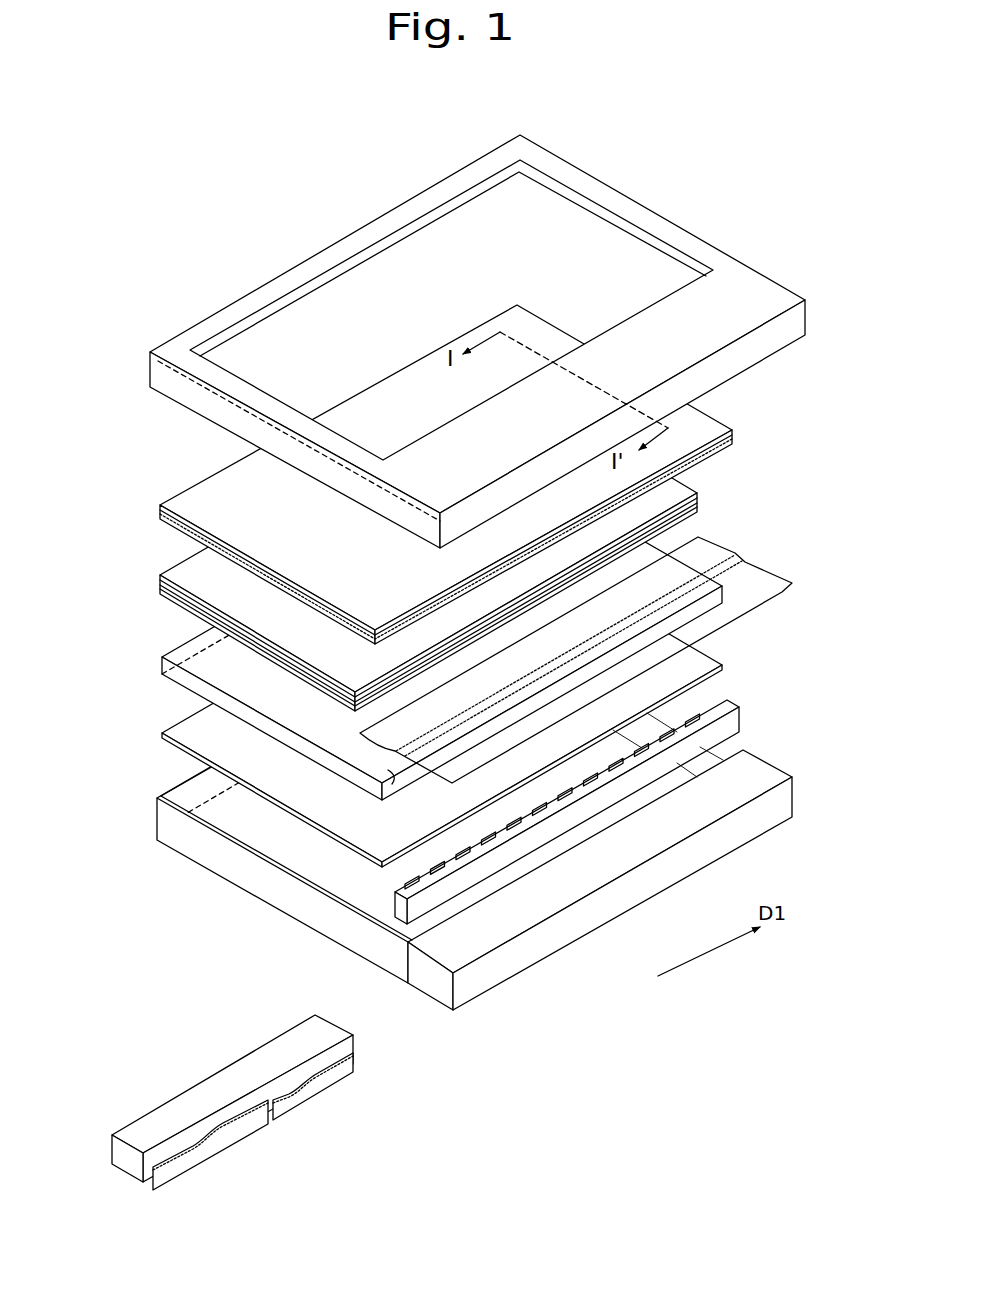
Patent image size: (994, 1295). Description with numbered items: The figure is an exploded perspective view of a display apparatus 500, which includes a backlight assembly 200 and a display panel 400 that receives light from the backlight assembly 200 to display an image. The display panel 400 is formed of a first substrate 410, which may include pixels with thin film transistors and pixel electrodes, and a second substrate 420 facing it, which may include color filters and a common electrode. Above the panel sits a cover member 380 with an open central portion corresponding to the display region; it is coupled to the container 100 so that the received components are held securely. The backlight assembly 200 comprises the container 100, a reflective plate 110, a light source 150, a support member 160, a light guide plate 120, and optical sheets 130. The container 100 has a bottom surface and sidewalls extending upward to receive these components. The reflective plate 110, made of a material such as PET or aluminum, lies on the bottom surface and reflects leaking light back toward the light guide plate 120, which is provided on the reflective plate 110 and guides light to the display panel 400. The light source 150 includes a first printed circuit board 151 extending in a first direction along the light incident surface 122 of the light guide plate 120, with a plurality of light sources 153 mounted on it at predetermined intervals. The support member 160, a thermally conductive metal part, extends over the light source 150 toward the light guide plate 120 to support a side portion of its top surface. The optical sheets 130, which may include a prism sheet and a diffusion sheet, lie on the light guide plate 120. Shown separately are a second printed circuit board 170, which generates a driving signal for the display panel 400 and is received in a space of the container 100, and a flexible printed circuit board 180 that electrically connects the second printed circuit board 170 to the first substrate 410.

The display apparatus 500 is at (477, 333).
The cover member 380 is at (216, 308).
The display panel 400 is at (512, 474).
The second substrate 420 is at (700, 405).
The first substrate 410 is at (690, 420).
The backlight assembly 200 is at (413, 693).
The optical sheets 130 is at (391, 543).
The light guide plate 120 is at (172, 646).
The light incident surface 122 is at (392, 788).
The reflective plate 110 is at (172, 724).
The container 100 is at (154, 792).
The support member 160 is at (740, 578).
The light source 150 is at (630, 791).
The first printed circuit board 151 is at (736, 712).
The light sources 153 is at (693, 716).
The second printed circuit board 170 is at (125, 1158).
The flexible printed circuit board 180 is at (315, 1088).